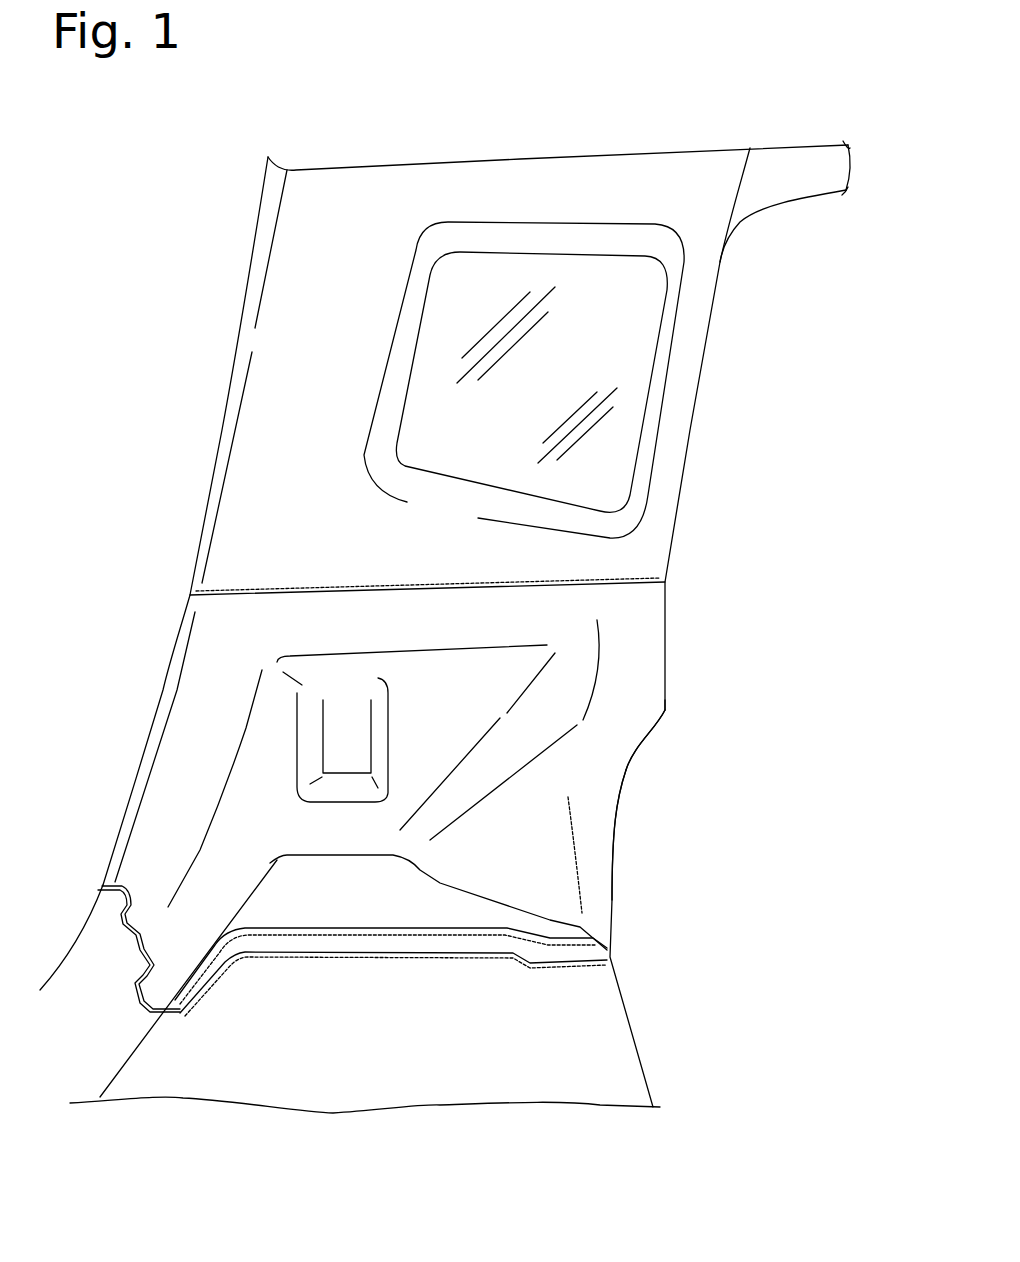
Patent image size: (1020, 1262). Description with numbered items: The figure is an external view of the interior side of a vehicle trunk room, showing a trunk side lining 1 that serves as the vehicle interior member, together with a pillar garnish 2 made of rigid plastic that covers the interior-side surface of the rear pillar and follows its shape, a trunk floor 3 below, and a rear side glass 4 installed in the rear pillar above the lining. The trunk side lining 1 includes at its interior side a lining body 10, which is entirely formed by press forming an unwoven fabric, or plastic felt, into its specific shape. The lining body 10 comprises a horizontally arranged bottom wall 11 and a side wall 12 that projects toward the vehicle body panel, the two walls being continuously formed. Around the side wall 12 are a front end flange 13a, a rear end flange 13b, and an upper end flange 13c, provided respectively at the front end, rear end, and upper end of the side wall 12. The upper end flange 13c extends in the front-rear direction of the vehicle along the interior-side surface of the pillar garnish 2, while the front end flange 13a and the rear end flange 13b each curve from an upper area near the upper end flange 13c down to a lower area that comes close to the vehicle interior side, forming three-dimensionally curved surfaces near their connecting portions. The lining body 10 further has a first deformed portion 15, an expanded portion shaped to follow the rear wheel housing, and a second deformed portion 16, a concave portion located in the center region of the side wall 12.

The trunk side lining 1 is at (668, 662).
The pillar garnish 2 is at (263, 425).
The trunk floor 3 is at (588, 1067).
The rear side glass 4 is at (620, 345).
The lining body 10 is at (597, 788).
The bottom wall 11 is at (287, 907).
The side wall 12 is at (270, 742).
The front end flange 13a is at (628, 709).
The rear end flange 13b is at (208, 673).
The upper end flange 13c is at (435, 620).
The first deformed portion 15 is at (487, 827).
The second deformed portion 16 is at (422, 705).